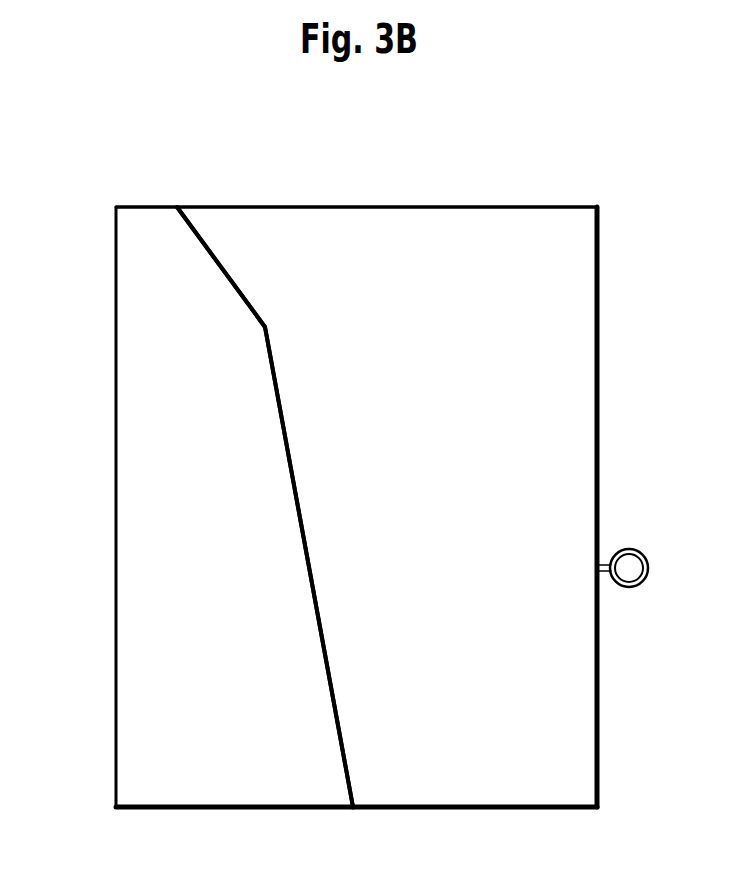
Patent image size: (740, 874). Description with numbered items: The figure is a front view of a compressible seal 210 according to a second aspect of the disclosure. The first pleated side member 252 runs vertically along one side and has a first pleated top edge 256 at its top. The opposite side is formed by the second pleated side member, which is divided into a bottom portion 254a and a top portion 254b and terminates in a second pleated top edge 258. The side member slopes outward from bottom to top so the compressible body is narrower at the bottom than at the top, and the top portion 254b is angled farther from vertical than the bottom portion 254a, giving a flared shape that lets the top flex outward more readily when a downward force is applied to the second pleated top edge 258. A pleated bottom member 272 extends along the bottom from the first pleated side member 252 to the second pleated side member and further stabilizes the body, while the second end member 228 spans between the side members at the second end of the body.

The compressible seal 210 is at (500, 169).
The second end member 228 is at (530, 658).
The first pleated side member 252 is at (598, 417).
The bottom portion 254a is at (320, 632).
The top portion 254b is at (225, 273).
The first pleated top edge 256 is at (597, 206).
The second pleated top edge 258 is at (177, 207).
The pleated bottom member 272 is at (538, 808).